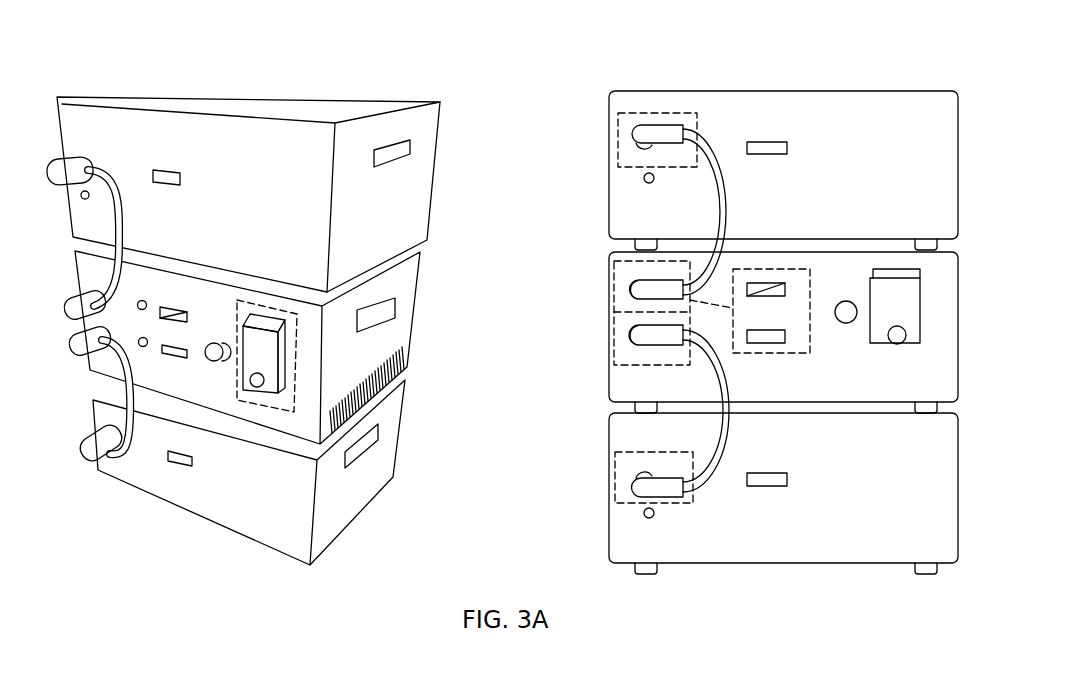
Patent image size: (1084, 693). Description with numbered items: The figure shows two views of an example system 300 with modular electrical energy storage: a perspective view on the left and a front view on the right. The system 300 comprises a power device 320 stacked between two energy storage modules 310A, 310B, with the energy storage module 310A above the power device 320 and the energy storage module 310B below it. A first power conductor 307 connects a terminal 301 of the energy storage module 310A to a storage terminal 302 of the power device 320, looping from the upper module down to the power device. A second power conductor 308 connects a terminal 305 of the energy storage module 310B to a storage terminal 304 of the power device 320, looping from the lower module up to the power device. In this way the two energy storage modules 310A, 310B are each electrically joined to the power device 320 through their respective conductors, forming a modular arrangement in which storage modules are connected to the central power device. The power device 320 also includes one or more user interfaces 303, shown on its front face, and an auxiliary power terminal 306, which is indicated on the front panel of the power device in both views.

The system 300 is at (607, 52).
The terminal 301 is at (618, 142).
The storage terminal 302 is at (614, 266).
The user interface 303 is at (630, 292).
The storage terminal 304 is at (614, 322).
The terminal 305 is at (615, 497).
The auxiliary power terminal 306 is at (295, 367).
The first power conductor 307 is at (122, 237).
The second power conductor 308 is at (141, 428).
The energy storage module 310A is at (278, 184).
The energy storage module 310B is at (289, 504).
The power device 320 is at (217, 387).